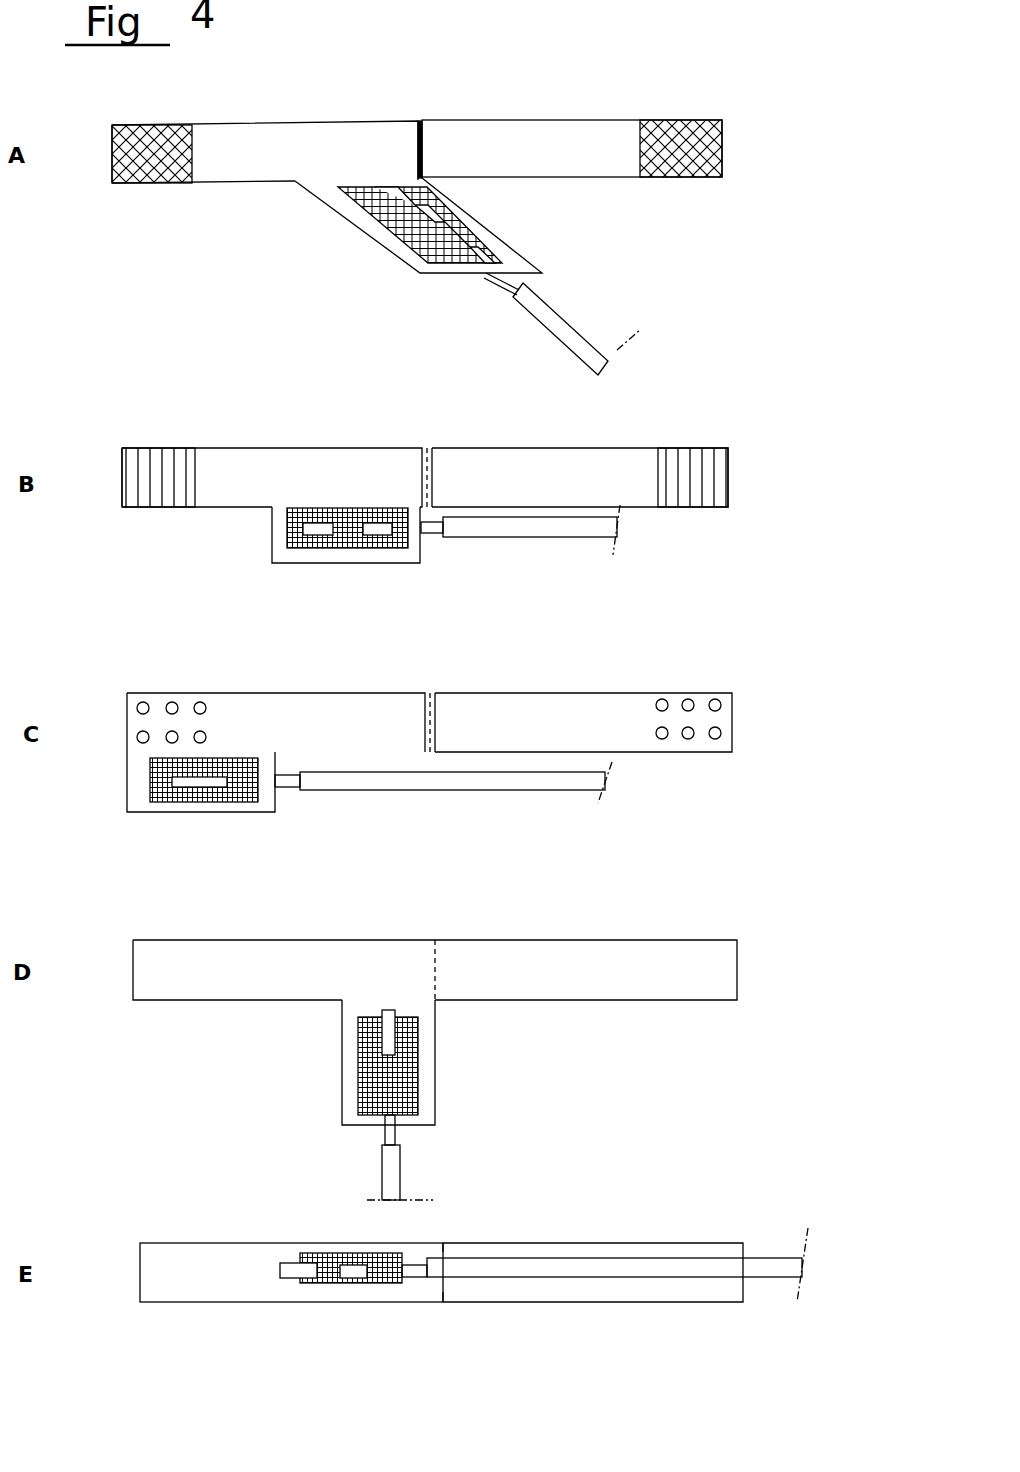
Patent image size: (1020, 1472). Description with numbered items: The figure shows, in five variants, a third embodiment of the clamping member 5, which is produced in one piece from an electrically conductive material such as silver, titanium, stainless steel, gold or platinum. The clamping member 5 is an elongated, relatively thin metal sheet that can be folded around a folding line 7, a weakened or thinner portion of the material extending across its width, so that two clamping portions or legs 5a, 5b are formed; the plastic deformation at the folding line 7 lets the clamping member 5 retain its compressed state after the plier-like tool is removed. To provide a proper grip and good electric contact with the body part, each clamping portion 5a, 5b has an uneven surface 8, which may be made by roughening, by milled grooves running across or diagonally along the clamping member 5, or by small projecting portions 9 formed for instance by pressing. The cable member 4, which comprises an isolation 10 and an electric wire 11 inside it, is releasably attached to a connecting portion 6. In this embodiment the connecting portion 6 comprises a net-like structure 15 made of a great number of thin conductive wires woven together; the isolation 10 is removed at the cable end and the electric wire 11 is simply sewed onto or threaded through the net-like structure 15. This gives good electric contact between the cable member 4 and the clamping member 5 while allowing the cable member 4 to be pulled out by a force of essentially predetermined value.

The cable member 4 is at (619, 319).
The clamping member 5 is at (493, 101).
The clamping portion 5a is at (222, 135).
The clamping portion 5b is at (583, 138).
The connecting portion 6 is at (359, 215).
The folding line 7 is at (421, 121).
The uneven surface 8 is at (157, 165).
The projecting portions 9 is at (200, 708).
The isolation 10 is at (560, 326).
The electric wire 11 is at (490, 282).
The net-like structure 15 is at (445, 222).